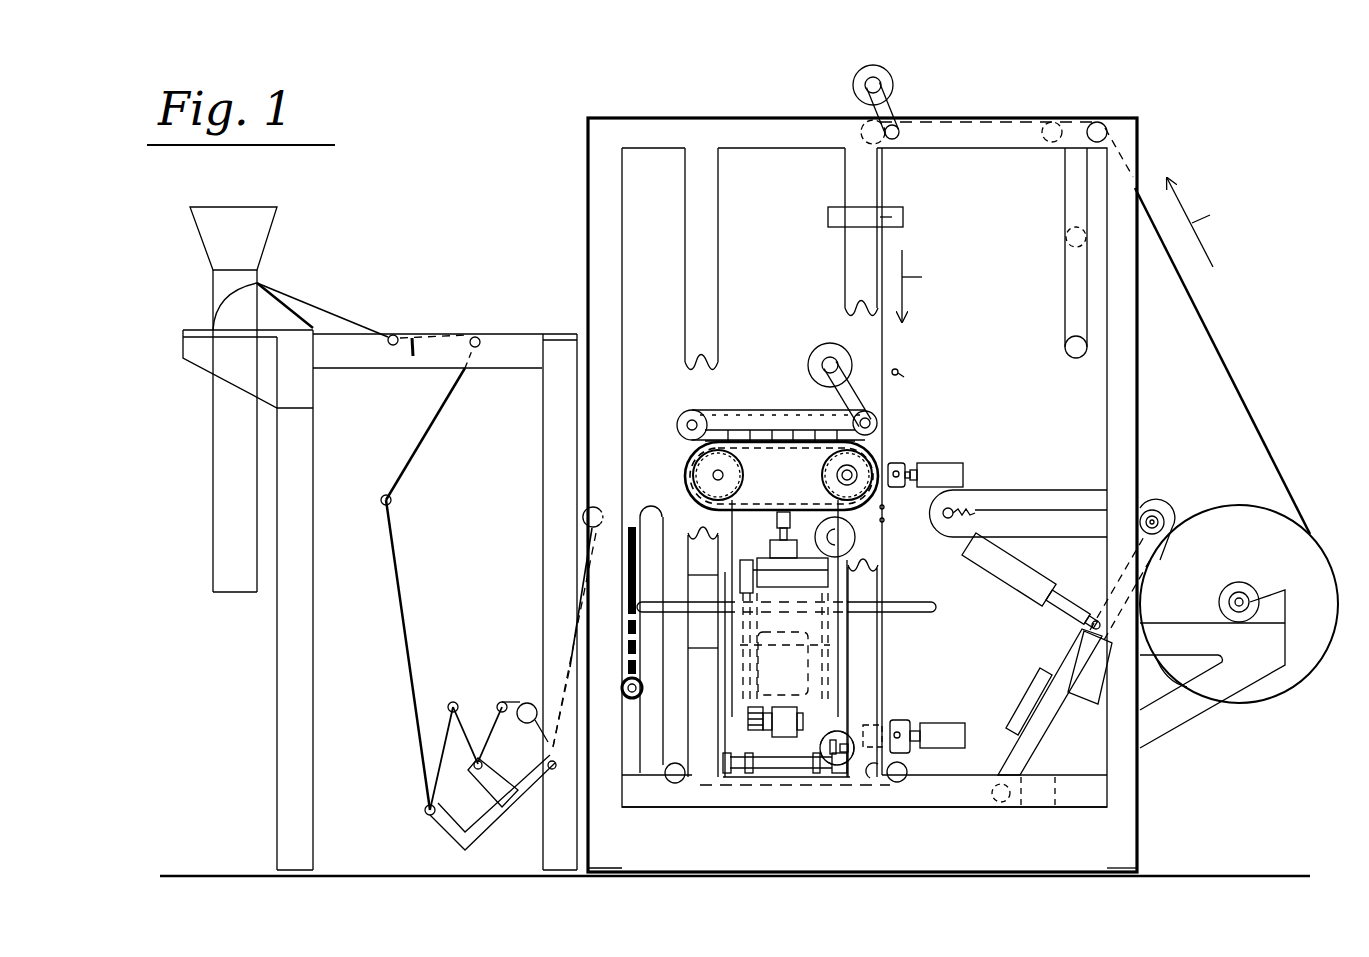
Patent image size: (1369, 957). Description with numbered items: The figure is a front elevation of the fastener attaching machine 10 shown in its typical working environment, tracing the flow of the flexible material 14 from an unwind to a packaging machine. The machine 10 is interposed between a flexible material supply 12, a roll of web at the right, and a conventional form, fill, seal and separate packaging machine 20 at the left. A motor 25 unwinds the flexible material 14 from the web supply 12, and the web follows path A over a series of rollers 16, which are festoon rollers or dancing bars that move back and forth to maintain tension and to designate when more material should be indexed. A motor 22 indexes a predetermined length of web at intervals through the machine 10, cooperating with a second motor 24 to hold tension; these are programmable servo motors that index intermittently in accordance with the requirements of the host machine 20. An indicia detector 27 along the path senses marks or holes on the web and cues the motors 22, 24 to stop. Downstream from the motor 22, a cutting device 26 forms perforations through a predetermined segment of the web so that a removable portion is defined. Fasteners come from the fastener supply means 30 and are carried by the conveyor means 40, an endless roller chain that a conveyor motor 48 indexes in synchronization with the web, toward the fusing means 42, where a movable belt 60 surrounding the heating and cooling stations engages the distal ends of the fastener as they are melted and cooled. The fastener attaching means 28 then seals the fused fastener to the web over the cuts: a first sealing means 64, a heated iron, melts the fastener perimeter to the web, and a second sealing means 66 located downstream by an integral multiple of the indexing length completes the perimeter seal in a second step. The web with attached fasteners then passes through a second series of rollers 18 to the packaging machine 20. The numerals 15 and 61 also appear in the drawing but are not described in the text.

The fastener attaching machine 10 is at (696, 392).
The flexible material supply 12 is at (1280, 690).
The flexible material 14 is at (887, 338).
The base of frame 15 is at (757, 784).
The series of rollers 16 is at (1052, 240).
The second series of rollers 18 is at (574, 561).
The form, fill, seal and separate packaging machine 20 is at (302, 242).
The motor 22 is at (852, 80).
The second motor 24 is at (833, 778).
The motor 25 is at (1098, 684).
The cutting device 26 is at (906, 211).
The indicia detector 27 is at (905, 377).
The fastener attaching means 28 is at (960, 460).
The fastener supply means 30 is at (845, 628).
The conveyor means 40 is at (684, 471).
The fusing means 42 is at (678, 425).
The conveyor motor 48 is at (858, 542).
The movable belt 60 is at (800, 410).
The crank pulley 61 is at (828, 342).
The sealing means 64 is at (906, 461).
The second sealing means 66 is at (911, 721).